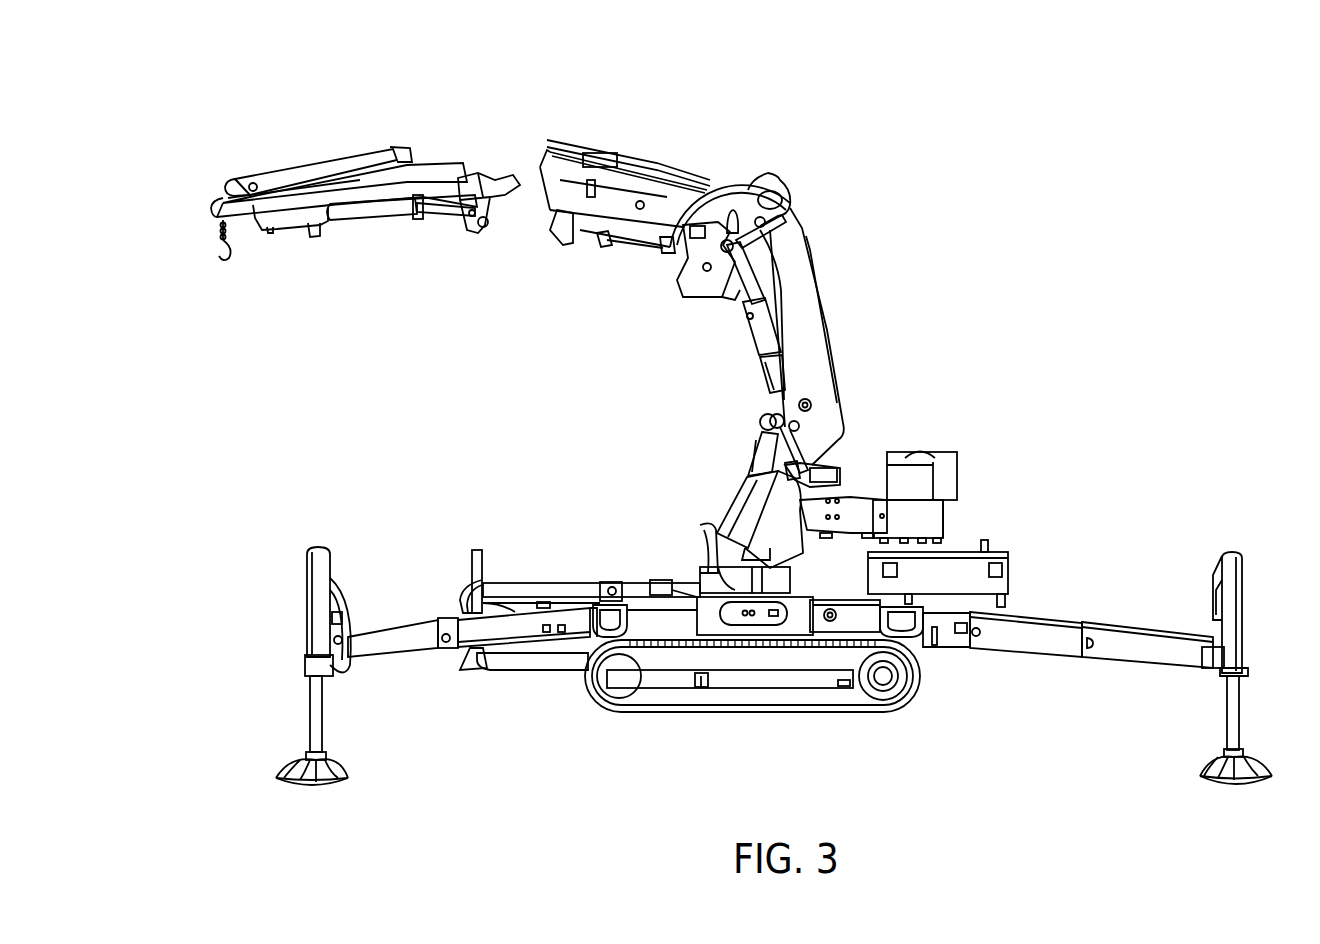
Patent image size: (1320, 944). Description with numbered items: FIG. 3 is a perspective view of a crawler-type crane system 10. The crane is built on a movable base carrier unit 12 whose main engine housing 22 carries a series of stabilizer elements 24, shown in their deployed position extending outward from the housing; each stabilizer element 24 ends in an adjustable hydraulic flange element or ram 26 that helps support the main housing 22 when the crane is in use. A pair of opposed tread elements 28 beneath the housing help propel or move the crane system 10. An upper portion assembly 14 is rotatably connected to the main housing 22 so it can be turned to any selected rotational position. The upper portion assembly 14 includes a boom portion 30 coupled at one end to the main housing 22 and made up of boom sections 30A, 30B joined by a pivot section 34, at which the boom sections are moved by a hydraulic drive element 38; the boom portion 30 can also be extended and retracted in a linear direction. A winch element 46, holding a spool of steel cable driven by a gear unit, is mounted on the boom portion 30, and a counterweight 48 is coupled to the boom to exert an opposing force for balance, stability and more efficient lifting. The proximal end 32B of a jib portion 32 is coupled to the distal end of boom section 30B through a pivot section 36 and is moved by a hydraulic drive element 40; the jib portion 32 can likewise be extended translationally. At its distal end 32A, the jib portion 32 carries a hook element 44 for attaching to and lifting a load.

The crane system 10 is at (1249, 130).
The carrier base unit 12 is at (1008, 552).
The upper portion assembly 14 is at (869, 159).
The main engine housing 22 is at (566, 592).
The stabilizer elements 24 is at (302, 620).
The hydraulic flange element or ram 26 is at (302, 717).
The tread elements 28 is at (680, 698).
The boom portion 30 is at (833, 339).
The boom section 30A is at (796, 404).
The boom section 30B is at (690, 172).
The jib portion 32 is at (350, 160).
The distal end of the jib portion 32A is at (230, 190).
The proximal end of the jib portion 32B is at (430, 160).
The pivot section 34 is at (813, 240).
The pivot section 36 is at (500, 162).
The hydraulic drive element 38 is at (750, 317).
The hydraulic drive element 40 is at (410, 216).
The hook element 44 is at (191, 258).
The winch element 46 is at (702, 282).
The counterweight 48 is at (945, 460).